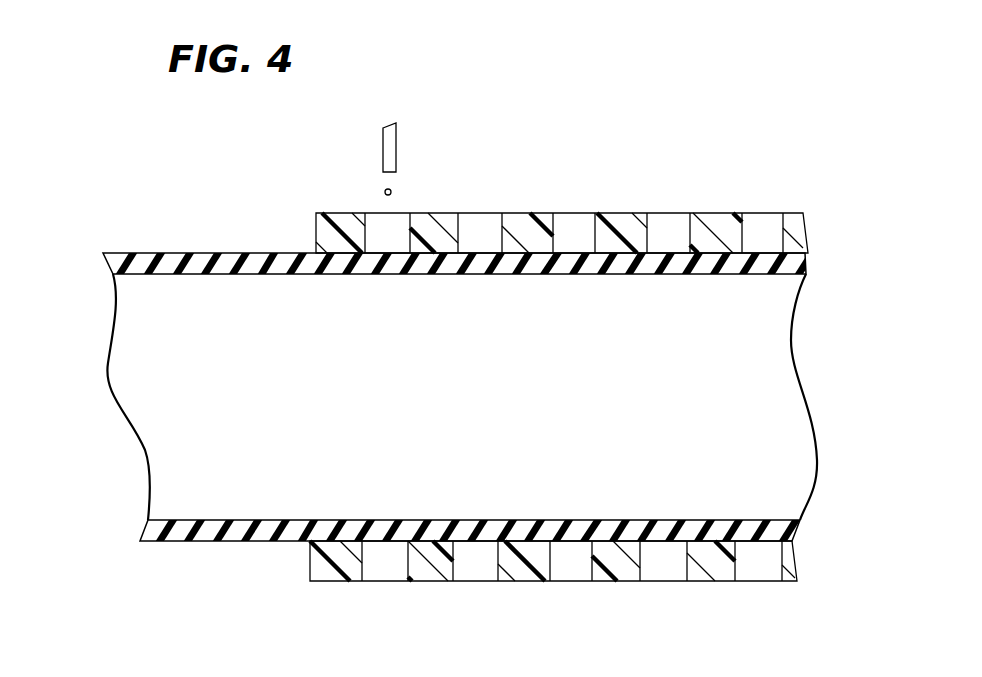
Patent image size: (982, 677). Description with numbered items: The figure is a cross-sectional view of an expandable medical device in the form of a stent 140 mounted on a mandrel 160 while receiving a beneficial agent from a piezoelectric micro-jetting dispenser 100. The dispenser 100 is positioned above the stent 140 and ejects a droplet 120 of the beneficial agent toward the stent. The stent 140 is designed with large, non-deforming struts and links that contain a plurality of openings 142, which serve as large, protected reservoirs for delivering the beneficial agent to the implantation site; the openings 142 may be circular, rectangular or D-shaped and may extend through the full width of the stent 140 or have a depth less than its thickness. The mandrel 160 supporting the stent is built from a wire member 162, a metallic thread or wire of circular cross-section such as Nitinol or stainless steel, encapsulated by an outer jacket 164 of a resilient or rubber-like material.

The piezoelectric micro-jetting dispenser 100 is at (397, 140).
The droplet 120 is at (391, 191).
The stent 140 is at (623, 230).
The openings 142 is at (382, 228).
The mandrel 160 is at (108, 468).
The wire member 162 is at (842, 404).
The outer jacket 164 is at (808, 266).